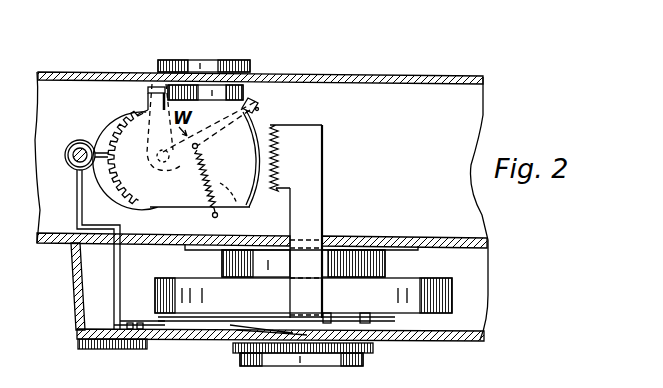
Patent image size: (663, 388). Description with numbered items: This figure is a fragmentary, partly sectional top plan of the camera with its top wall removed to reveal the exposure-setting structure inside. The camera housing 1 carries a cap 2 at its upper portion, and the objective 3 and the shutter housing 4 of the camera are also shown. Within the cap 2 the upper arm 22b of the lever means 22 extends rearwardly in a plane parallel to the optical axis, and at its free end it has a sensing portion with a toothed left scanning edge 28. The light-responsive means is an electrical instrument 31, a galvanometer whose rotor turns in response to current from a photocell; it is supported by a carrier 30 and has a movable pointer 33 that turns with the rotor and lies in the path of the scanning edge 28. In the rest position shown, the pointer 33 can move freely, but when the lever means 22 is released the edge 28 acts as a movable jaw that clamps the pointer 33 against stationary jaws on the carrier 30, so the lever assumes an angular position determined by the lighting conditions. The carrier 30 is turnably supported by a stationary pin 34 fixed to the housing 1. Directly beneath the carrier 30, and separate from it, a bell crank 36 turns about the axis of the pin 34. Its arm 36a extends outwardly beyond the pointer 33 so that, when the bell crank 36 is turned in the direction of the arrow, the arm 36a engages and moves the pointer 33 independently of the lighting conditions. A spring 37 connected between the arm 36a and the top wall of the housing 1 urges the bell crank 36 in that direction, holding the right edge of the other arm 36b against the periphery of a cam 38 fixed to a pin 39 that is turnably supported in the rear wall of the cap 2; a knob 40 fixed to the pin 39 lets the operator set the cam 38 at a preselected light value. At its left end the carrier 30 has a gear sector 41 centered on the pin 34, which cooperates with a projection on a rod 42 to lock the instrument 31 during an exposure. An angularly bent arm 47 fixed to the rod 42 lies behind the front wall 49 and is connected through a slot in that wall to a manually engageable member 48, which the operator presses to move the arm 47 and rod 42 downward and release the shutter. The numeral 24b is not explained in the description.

The camera housing 1 is at (472, 214).
The cap 2 is at (449, 76).
The objective 3 is at (376, 358).
The shutter housing 4 is at (438, 291).
The lever means 22 is at (238, 320).
The upper arm 22b is at (314, 209).
The member 24b is at (346, 9).
The scanning edge 28 is at (277, 150).
The carrier 30 is at (252, 192).
The electrical instrument 31 is at (186, 194).
The pointer 33 is at (256, 112).
The stationary pin 34 is at (137, 116).
The bell crank 36 is at (147, 85).
The arm of the bell crank 36a is at (252, 88).
The other arm of the bell crank 36b is at (152, 84).
The spring 37 is at (219, 212).
The cam 38 is at (188, 88).
The pin 39 is at (194, 92).
The knob 40 is at (200, 60).
The gear sector 41 is at (112, 123).
The rod 42 is at (67, 153).
The arm 47 is at (117, 282).
The manually engageable member 48 is at (117, 349).
The front wall 49 is at (181, 341).